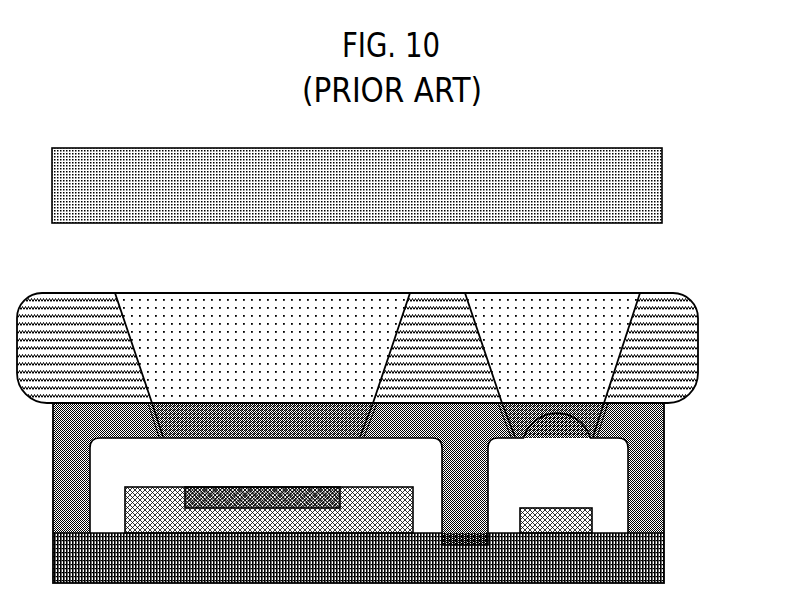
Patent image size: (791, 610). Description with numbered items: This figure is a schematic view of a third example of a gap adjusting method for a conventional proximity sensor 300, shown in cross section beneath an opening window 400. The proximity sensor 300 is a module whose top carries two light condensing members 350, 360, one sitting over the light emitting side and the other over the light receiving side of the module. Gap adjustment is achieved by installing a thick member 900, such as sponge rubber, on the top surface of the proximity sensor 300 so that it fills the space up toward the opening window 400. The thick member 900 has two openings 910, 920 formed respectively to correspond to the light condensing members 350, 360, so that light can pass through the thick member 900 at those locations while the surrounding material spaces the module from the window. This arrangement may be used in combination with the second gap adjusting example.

The proximity sensor 300 is at (683, 403).
The light condensing member 350 is at (263, 441).
The light condensing member 360 is at (558, 440).
The opening window 400 is at (677, 147).
The thick member 900 is at (713, 293).
The opening 910 is at (264, 291).
The opening 920 is at (554, 291).